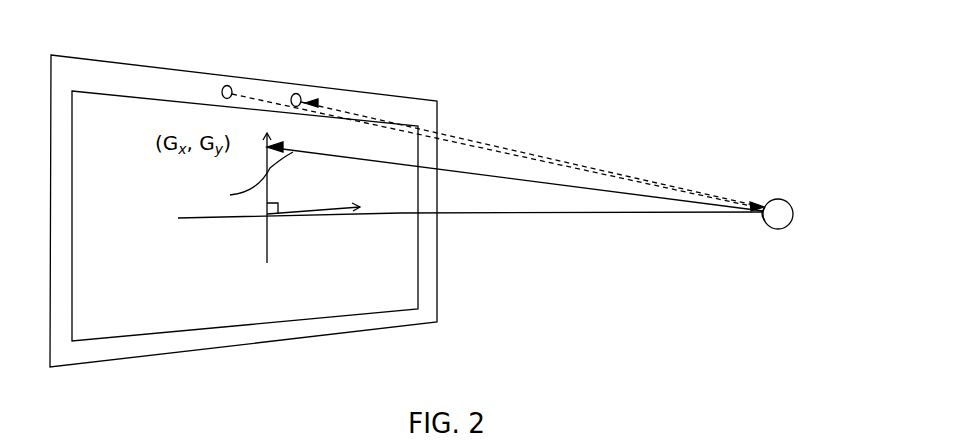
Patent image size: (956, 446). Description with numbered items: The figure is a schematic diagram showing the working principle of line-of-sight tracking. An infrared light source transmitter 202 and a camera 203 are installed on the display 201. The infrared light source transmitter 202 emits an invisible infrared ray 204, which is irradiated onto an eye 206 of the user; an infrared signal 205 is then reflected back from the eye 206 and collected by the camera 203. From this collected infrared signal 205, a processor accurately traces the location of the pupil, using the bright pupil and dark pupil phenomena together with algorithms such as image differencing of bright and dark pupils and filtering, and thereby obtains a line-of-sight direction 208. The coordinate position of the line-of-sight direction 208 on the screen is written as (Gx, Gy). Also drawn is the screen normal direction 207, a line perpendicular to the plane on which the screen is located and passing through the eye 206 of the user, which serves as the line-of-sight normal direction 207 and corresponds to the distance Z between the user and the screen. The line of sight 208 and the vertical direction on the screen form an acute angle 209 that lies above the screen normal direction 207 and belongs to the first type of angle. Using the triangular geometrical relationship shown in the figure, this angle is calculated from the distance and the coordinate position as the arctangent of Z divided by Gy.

The display 201 is at (83, 57).
The infrared light source transmitter 202 is at (228, 85).
The camera 203 is at (296, 93).
The infrared ray 204 is at (330, 113).
The infrared signal 205 is at (395, 122).
The eye 206 is at (781, 199).
The screen normal direction 207 is at (495, 215).
The line-of-sight direction 208 is at (547, 178).
The acute angle 209 is at (239, 179).